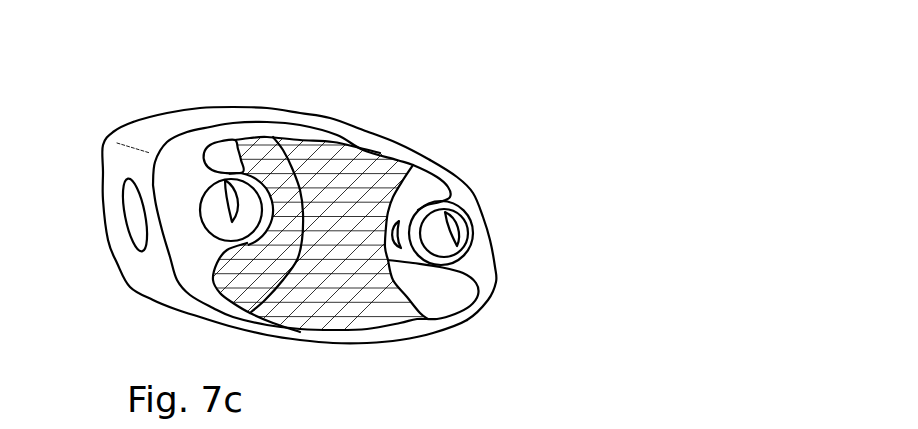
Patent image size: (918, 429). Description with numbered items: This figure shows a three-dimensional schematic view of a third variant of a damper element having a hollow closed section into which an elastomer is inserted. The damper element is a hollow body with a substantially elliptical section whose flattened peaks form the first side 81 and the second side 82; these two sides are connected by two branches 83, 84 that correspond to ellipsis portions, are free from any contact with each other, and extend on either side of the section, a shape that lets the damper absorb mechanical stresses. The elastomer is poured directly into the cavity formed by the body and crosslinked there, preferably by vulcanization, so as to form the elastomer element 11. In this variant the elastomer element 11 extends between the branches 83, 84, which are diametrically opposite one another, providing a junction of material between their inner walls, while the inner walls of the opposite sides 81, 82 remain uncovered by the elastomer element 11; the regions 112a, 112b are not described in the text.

The elastomer element 11 is at (422, 145).
The first side 81 is at (118, 218).
The second side 82 is at (493, 222).
The branch 83 is at (233, 113).
The branch 84 is at (407, 340).
The recess 112a is at (447, 290).
The recess 112b is at (220, 155).